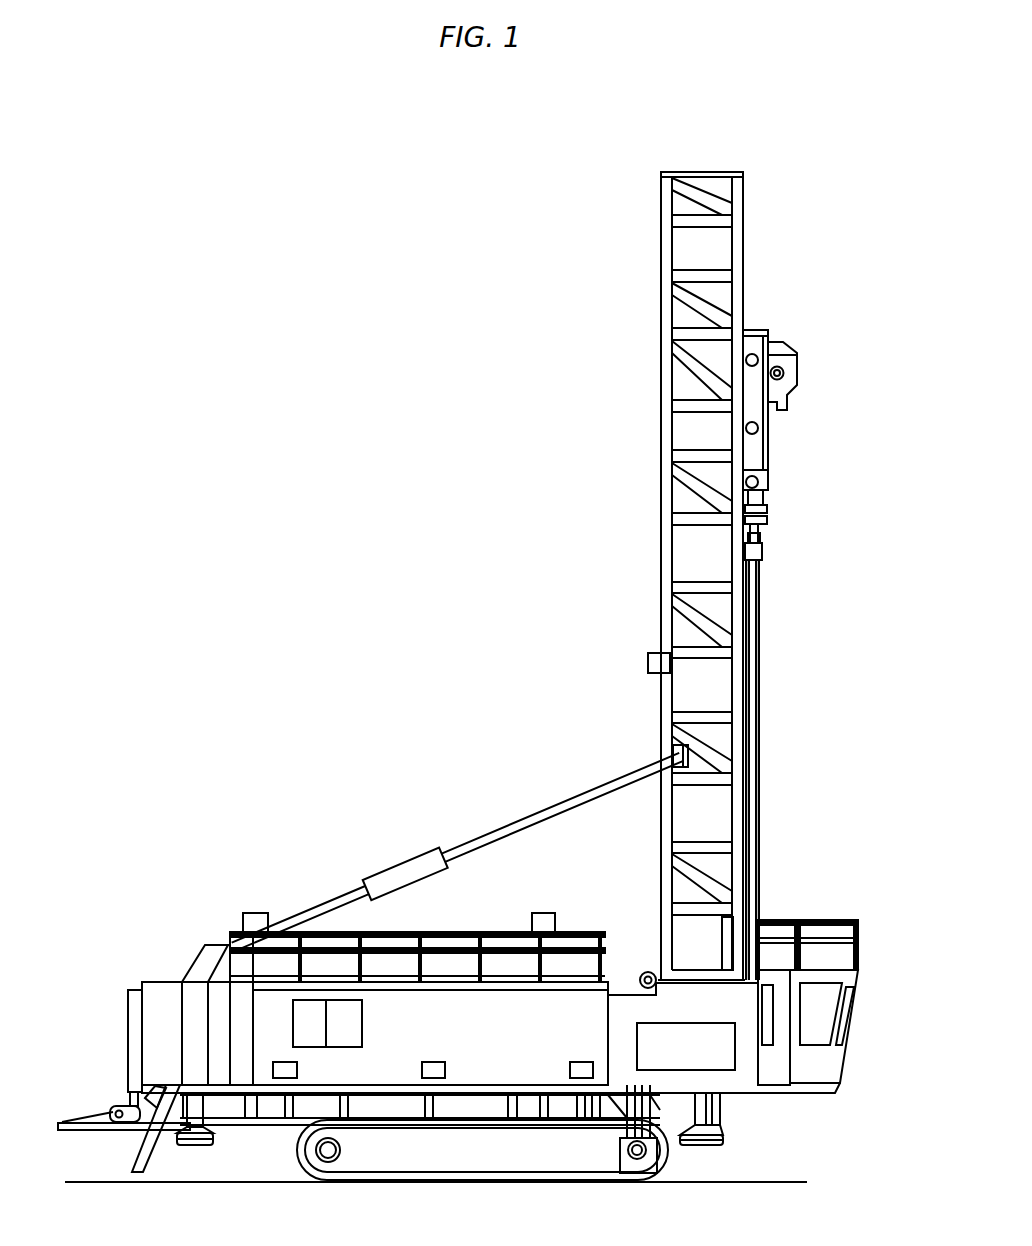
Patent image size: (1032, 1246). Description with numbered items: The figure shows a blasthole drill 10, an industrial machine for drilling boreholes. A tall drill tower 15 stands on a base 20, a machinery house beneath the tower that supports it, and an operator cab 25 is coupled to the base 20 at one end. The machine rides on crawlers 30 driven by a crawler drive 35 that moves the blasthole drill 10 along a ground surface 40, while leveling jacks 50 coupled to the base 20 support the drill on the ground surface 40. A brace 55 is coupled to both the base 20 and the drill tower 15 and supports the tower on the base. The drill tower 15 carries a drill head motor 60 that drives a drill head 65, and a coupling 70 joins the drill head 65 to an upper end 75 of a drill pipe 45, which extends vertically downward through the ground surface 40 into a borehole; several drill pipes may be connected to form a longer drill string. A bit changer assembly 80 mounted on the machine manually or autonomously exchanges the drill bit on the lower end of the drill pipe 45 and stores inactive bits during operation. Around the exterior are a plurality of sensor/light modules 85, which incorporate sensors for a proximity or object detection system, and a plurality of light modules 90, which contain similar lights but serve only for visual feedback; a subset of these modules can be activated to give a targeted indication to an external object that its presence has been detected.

The blasthole drill 10 is at (252, 808).
The drill tower 15 is at (656, 494).
The base 20 is at (545, 1028).
The operator cab 25 is at (815, 1072).
The crawlers 30 is at (298, 1160).
The crawler drive 35 is at (640, 1152).
The ground surface 40 is at (773, 1172).
The drill pipe 45 is at (762, 756).
The leveling jacks 50 is at (202, 1147).
The brace 55 is at (517, 822).
The drill head motor 60 is at (769, 474).
The drill head 65 is at (764, 515).
The coupling 70 is at (763, 547).
The upper end 75 is at (762, 596).
The bit changer assembly 80 is at (690, 1045).
The sensor/light modules 85 is at (283, 1062).
The light modules 90 is at (250, 913).